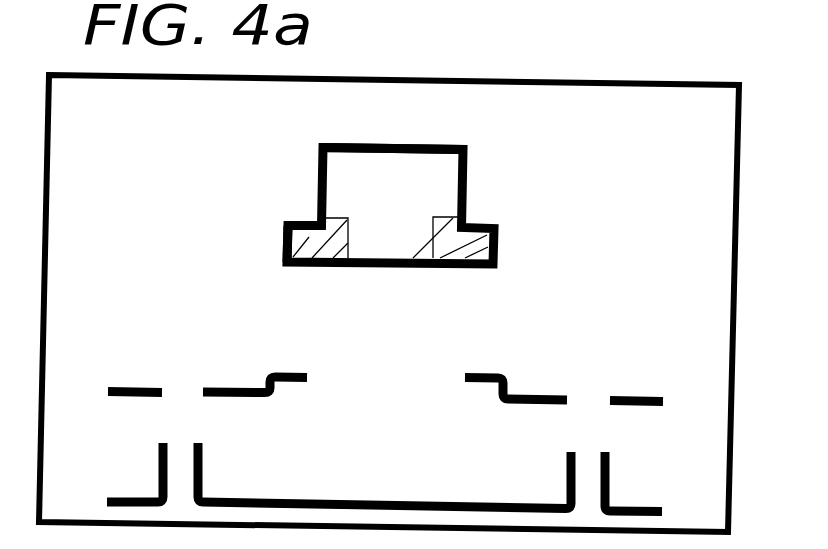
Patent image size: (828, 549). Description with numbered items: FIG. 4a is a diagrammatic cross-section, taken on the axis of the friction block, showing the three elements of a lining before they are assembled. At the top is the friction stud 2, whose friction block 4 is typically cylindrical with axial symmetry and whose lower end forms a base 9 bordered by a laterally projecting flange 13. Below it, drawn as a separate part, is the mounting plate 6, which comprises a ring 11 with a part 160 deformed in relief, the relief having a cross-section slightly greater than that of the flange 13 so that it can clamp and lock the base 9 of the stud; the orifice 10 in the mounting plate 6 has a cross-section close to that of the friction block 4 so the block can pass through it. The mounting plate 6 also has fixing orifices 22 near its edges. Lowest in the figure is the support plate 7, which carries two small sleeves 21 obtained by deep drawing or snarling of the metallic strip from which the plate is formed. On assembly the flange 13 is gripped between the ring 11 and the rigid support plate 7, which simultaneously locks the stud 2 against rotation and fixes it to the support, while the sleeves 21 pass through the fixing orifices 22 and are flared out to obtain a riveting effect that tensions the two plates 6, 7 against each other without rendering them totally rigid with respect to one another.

The friction stud 2 is at (475, 193).
The friction block 4 is at (390, 163).
The mounting plate 6 is at (635, 397).
The support plate 7 is at (628, 505).
The base 9 is at (367, 270).
The orifice 10 is at (380, 375).
The ring 11 is at (293, 372).
The flange 13 is at (298, 267).
The sleeve 21 is at (157, 483).
The fixing orifice 22 is at (187, 393).
The deformed relief part 160 is at (485, 376).